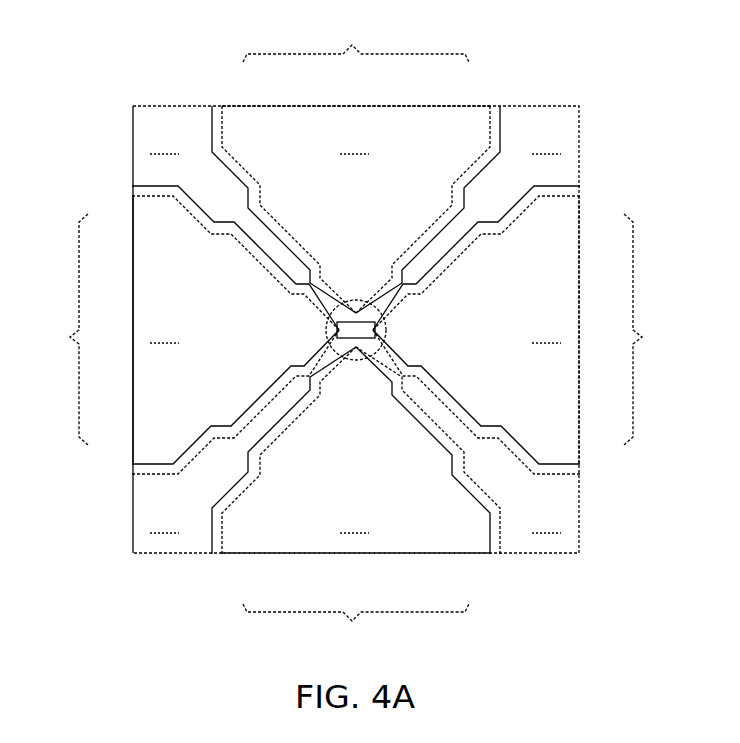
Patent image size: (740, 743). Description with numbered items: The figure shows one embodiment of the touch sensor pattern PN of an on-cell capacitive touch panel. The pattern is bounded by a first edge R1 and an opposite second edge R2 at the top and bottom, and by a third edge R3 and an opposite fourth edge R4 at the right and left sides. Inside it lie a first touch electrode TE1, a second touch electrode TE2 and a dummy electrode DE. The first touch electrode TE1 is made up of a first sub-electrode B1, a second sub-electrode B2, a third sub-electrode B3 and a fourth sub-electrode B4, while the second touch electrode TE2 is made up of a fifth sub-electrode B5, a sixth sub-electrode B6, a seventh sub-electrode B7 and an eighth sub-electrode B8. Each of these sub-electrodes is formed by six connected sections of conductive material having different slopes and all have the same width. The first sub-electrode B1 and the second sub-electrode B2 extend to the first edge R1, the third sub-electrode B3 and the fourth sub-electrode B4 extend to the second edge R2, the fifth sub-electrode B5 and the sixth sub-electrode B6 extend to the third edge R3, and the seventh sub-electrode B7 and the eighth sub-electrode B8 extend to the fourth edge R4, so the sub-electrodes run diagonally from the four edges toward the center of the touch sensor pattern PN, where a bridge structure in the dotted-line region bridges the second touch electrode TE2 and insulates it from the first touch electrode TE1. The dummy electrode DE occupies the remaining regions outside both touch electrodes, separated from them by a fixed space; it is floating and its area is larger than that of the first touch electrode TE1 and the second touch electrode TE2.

The touch sensor pattern PN is at (127, 58).
The dummy electrode DE is at (355, 331).
The first touch electrode TE1 is at (356, 332).
The second touch electrode TE2 is at (356, 330).
The first sub-electrode B1 is at (218, 107).
The second sub-electrode B2 is at (495, 107).
The third sub-electrode B3 is at (218, 550).
The fourth sub-electrode B4 is at (494, 552).
The fifth sub-electrode B5 is at (580, 192).
The sixth sub-electrode B6 is at (580, 466).
The seventh sub-electrode B7 is at (134, 192).
The eighth sub-electrode B8 is at (133, 466).
The first edge R1 is at (320, 105).
The second edge R2 is at (391, 552).
The third edge R3 is at (581, 292).
The fourth edge R4 is at (133, 367).